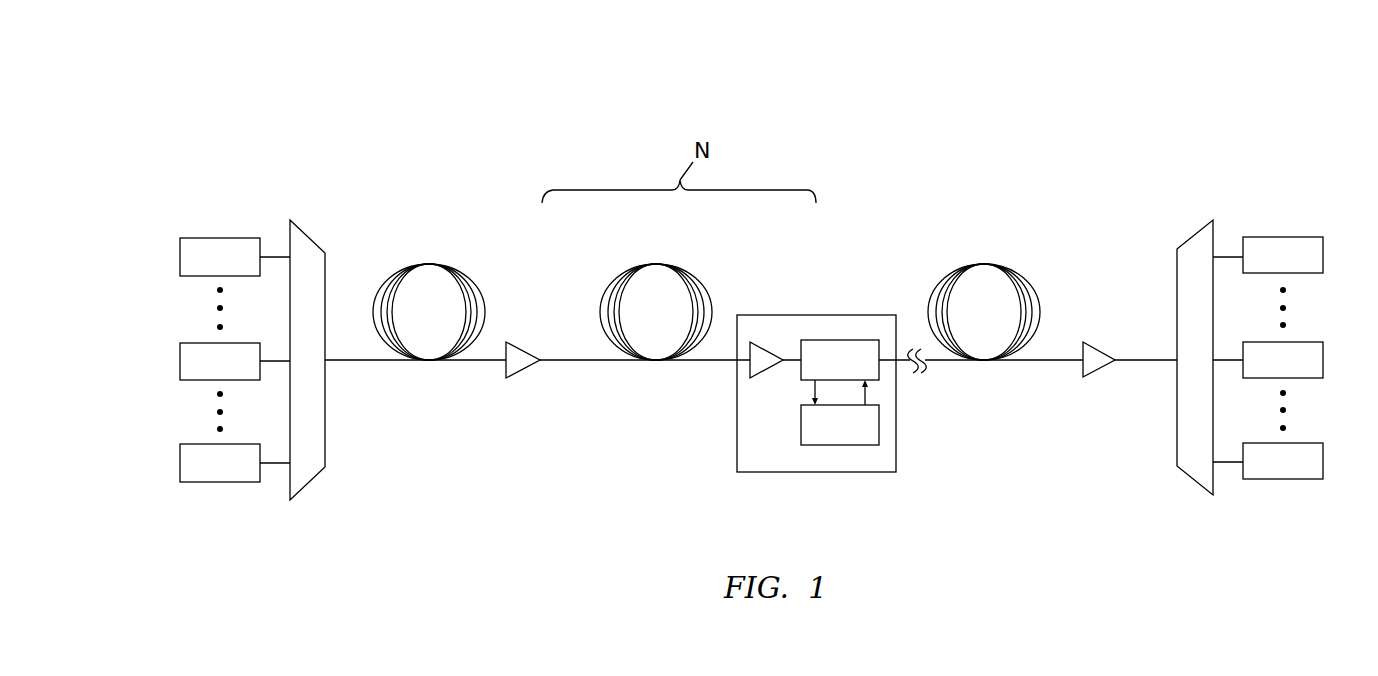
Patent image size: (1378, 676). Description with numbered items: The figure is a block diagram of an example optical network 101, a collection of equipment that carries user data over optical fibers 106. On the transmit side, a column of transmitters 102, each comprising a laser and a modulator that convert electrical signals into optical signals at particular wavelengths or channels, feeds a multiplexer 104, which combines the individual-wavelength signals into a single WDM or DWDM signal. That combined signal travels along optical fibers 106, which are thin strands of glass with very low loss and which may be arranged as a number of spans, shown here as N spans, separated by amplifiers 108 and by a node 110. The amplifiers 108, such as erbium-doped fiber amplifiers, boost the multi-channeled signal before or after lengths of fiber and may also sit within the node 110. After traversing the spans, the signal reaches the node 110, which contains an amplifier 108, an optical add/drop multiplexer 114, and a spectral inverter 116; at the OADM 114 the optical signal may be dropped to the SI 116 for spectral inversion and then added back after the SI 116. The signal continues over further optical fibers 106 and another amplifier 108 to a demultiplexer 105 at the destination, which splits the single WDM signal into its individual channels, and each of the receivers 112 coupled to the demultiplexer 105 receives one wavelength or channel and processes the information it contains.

The optical network 101 is at (278, 110).
The transmitters 102 is at (195, 238).
The multiplexer 104 is at (307, 232).
The demultiplexer 105 is at (1198, 230).
The optical fibers 106 is at (448, 263).
The amplifiers 108 is at (520, 368).
The node 110 is at (825, 315).
The receivers 112 is at (1305, 237).
The optical add/drop multiplexer 114 is at (879, 370).
The spectral inverter 116 is at (879, 418).